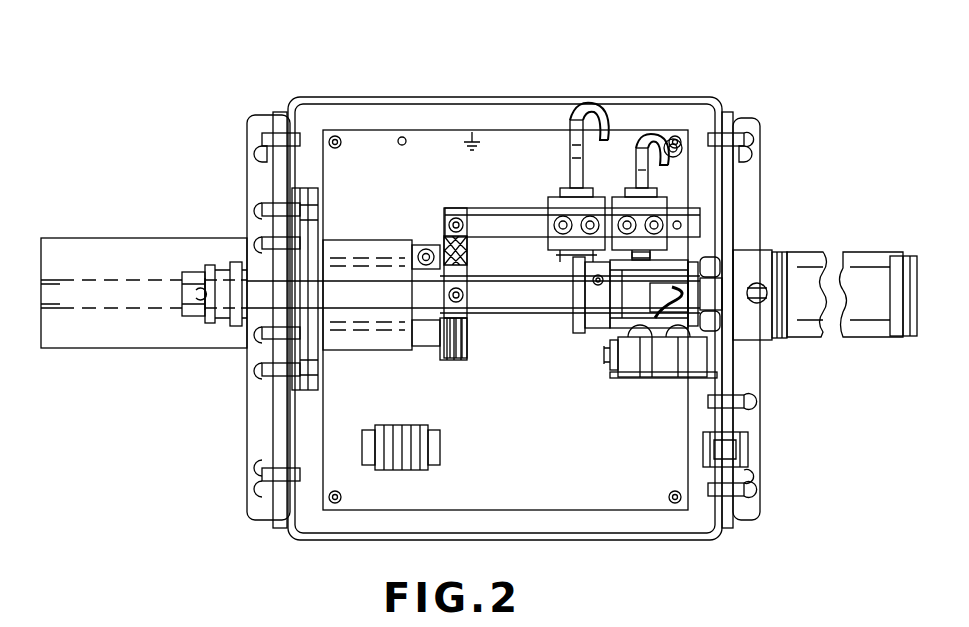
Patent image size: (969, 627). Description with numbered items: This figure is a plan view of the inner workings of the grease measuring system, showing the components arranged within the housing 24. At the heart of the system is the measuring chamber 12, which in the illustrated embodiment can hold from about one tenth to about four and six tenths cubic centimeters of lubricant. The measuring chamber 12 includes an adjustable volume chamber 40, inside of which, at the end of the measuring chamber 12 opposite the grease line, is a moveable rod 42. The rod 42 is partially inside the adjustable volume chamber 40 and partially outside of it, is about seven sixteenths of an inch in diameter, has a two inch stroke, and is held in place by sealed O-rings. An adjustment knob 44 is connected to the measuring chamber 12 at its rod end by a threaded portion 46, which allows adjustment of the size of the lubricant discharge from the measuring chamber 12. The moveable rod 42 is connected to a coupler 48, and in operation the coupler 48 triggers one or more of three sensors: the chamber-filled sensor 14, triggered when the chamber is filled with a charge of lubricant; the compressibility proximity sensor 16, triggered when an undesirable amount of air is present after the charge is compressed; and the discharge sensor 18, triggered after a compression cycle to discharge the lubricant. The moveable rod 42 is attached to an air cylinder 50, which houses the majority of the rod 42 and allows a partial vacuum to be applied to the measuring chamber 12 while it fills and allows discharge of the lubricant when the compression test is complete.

The measuring chamber 12 is at (87, 258).
The chamber-filled sensor 14 is at (640, 215).
The compressibility proximity sensor 16 is at (572, 215).
The discharge sensor 18 is at (688, 293).
The housing 24 is at (345, 520).
The adjustable volume chamber 40 is at (137, 298).
The moveable rod 42 is at (503, 298).
The adjustment knob 44 is at (446, 242).
The threaded portion 46 is at (447, 330).
The coupler 48 is at (632, 322).
The air cylinder 50 is at (818, 258).